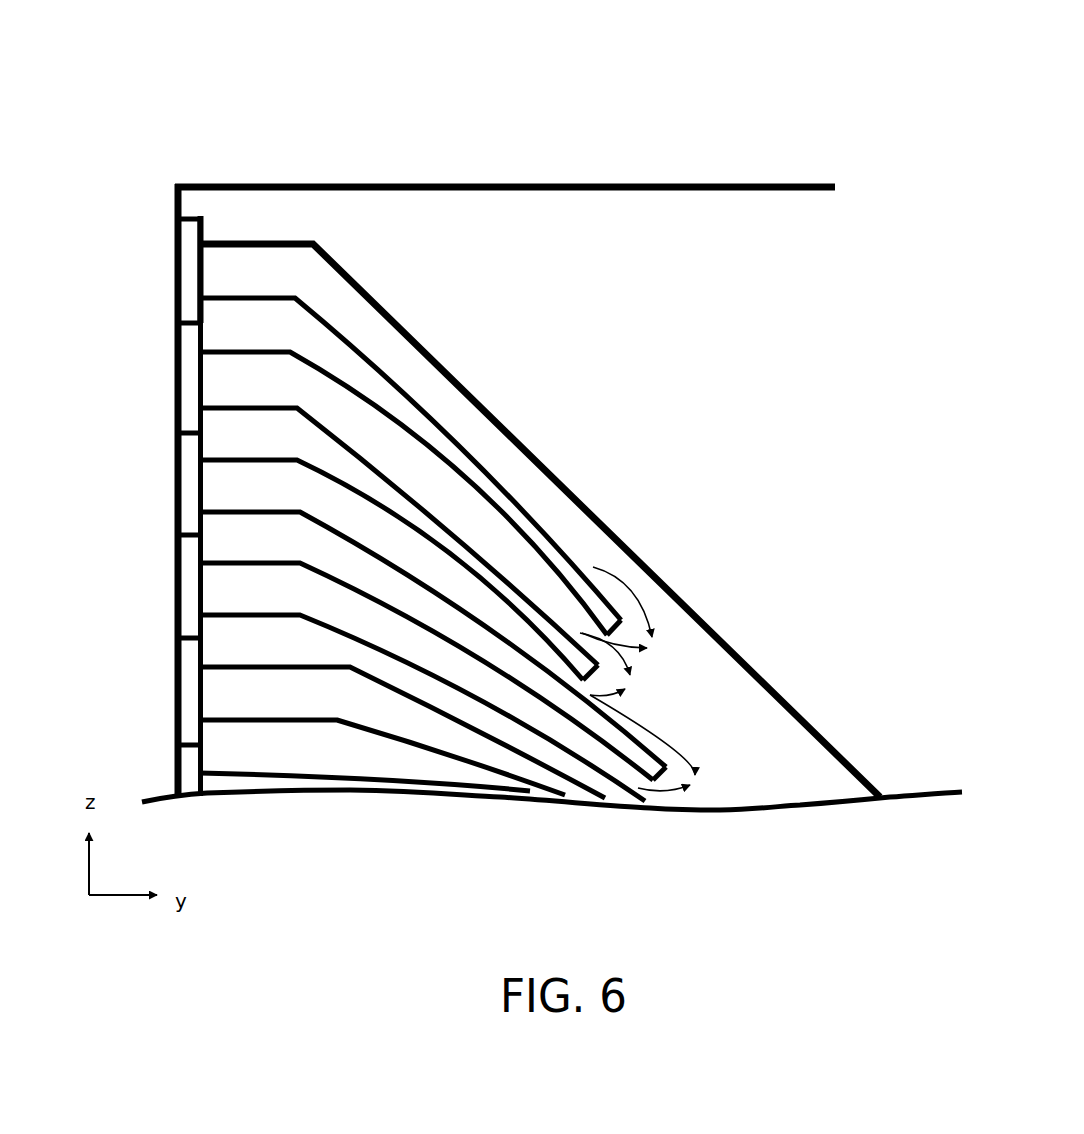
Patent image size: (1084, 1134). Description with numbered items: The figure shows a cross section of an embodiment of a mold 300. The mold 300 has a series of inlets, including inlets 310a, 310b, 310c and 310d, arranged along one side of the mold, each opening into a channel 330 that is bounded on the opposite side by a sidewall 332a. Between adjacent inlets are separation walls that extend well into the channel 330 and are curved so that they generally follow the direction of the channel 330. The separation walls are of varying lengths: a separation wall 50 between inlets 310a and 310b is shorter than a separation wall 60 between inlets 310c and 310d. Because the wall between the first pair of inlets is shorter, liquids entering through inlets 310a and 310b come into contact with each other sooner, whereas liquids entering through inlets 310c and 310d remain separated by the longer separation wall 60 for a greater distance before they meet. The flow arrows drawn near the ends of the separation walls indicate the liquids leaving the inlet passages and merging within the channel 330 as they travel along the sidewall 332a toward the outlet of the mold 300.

The mold 300 is at (525, 130).
The inlet 310a is at (188, 275).
The inlet 310b is at (188, 372).
The inlet 310c is at (188, 487).
The inlet 310d is at (188, 589).
The separation wall 50 is at (266, 340).
The separation wall 60 is at (264, 553).
The sidewall 332a is at (549, 481).
The channel 330 is at (760, 775).